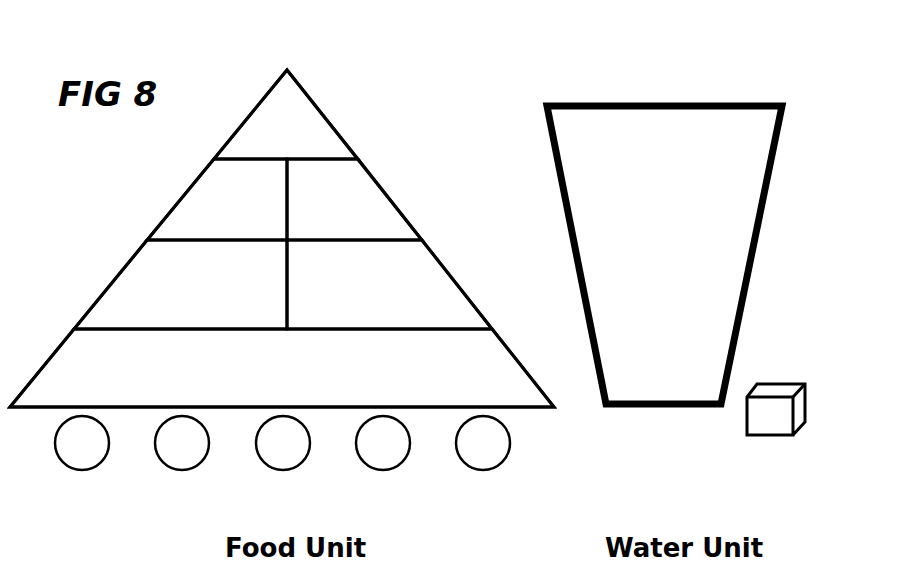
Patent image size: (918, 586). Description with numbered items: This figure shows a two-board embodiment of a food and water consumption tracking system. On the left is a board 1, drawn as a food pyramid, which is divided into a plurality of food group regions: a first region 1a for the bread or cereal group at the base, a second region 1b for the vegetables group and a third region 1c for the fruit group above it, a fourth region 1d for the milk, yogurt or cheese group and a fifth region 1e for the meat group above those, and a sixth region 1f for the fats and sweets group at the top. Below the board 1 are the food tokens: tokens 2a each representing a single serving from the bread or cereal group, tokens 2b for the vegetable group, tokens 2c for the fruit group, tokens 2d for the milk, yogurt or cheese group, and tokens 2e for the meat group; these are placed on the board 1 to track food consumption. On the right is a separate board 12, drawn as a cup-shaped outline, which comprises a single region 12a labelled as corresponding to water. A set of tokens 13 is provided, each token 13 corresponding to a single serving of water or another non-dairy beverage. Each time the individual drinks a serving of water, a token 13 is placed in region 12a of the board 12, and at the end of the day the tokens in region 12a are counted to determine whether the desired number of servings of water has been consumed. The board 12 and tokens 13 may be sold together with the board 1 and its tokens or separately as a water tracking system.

The board 1 is at (128, 250).
The first region 1a is at (90, 378).
The second region 1b is at (142, 318).
The third region 1c is at (425, 288).
The fourth region 1d is at (188, 221).
The fifth region 1e is at (388, 223).
The sixth region 1f is at (320, 145).
The tokens 2a is at (80, 474).
The tokens 2b is at (180, 474).
The tokens 2c is at (282, 474).
The tokens 2d is at (382, 474).
The tokens 2e is at (482, 474).
The board 12 is at (752, 300).
The region 12a is at (744, 182).
The tokens 13 is at (773, 440).